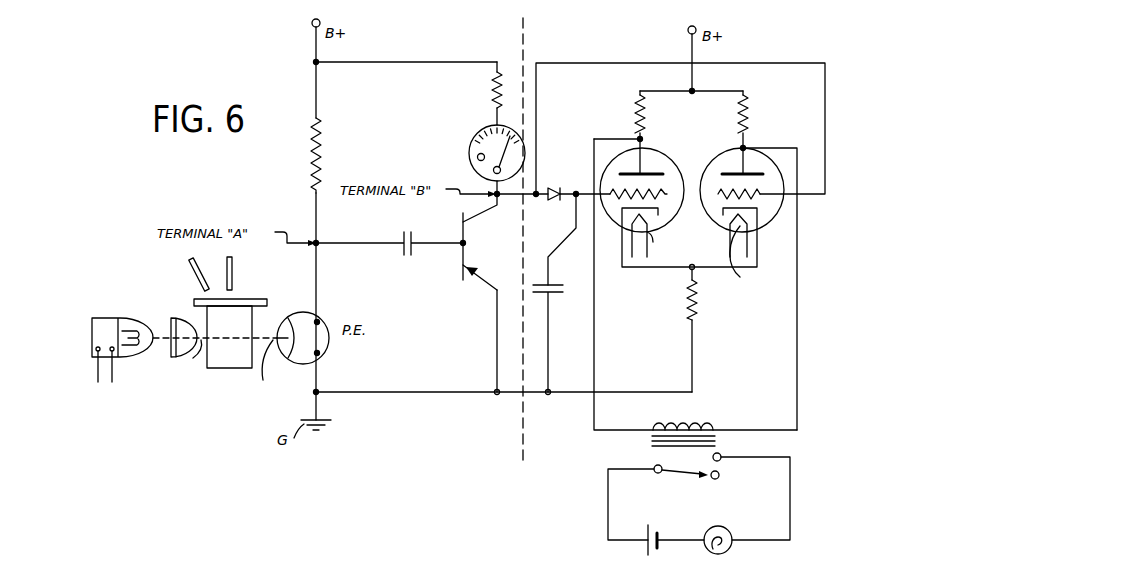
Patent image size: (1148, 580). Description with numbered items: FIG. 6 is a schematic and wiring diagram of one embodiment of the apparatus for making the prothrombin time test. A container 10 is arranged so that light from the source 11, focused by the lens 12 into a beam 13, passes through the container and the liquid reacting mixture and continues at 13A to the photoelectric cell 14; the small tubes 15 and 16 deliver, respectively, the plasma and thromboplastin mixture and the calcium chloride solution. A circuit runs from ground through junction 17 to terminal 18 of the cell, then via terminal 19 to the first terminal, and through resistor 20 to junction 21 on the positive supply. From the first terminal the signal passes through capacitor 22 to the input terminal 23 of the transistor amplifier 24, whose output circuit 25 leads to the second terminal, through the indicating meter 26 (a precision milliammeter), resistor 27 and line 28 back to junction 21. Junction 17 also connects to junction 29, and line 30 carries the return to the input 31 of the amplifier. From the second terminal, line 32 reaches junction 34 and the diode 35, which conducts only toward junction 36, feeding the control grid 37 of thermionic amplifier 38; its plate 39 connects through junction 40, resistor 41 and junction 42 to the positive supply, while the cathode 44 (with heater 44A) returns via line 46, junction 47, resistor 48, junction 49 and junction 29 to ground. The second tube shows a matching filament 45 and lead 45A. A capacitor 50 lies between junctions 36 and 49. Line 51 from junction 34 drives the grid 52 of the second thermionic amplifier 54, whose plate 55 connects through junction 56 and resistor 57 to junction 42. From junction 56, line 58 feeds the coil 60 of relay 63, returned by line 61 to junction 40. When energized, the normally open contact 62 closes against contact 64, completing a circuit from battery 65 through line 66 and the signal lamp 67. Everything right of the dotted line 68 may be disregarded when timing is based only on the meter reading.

The container 10 is at (213, 353).
The light source 11 is at (145, 319).
The lens 12 is at (180, 318).
The beam 13 is at (201, 340).
The continuing beam 13A is at (273, 369).
The photoelectric cell 14 is at (302, 318).
The tube 15 is at (233, 272).
The tube 16 is at (190, 274).
The junction 17 is at (317, 392).
The terminal 18 is at (318, 353).
The terminal 19 is at (318, 321).
The resistor 20 is at (321, 148).
The junction 21 is at (318, 64).
The capacitor 22 is at (402, 234).
The input terminal 23 is at (461, 249).
The transistor amplifier 24 is at (466, 247).
The output circuit 25 is at (484, 209).
The indicating meter 26 is at (470, 153).
The resistor 27 is at (492, 97).
The line 28 is at (425, 62).
The junction 29 is at (494, 390).
The line 30 is at (495, 322).
The input 31 is at (476, 268).
The line 32 is at (528, 199).
The junction 34 is at (537, 192).
The diode 35 is at (557, 190).
The junction 36 is at (570, 200).
The control grid 37 is at (667, 190).
The thermionic amplifier 38 is at (664, 153).
The plate 39 is at (643, 170).
The junction 40 is at (640, 138).
The resistor 41 is at (638, 110).
The junction 42 is at (694, 91).
The cathode 44 is at (658, 214).
The heater 44A is at (651, 232).
The filament 45 is at (723, 237).
The filament lead 45A is at (748, 259).
The line 46 is at (648, 268).
The junction 47 is at (689, 269).
The resistor 48 is at (696, 301).
The junction 49 is at (550, 392).
The capacitor 50 is at (543, 295).
The line 51 is at (616, 63).
The grid 52 is at (758, 223).
The second thermionic amplifier 54 is at (723, 158).
The plate 55 is at (752, 196).
The junction 56 is at (744, 148).
The resistor 57 is at (743, 119).
The line 58 is at (798, 283).
The coil 60 is at (691, 422).
The line 61 is at (596, 336).
The relay contact 62 is at (704, 474).
The relay 63 is at (721, 449).
The contact 64 is at (722, 454).
The battery 65 is at (645, 549).
The line 66 is at (791, 513).
The signal lamp 67 is at (733, 531).
The dotted line 68 is at (525, 20).